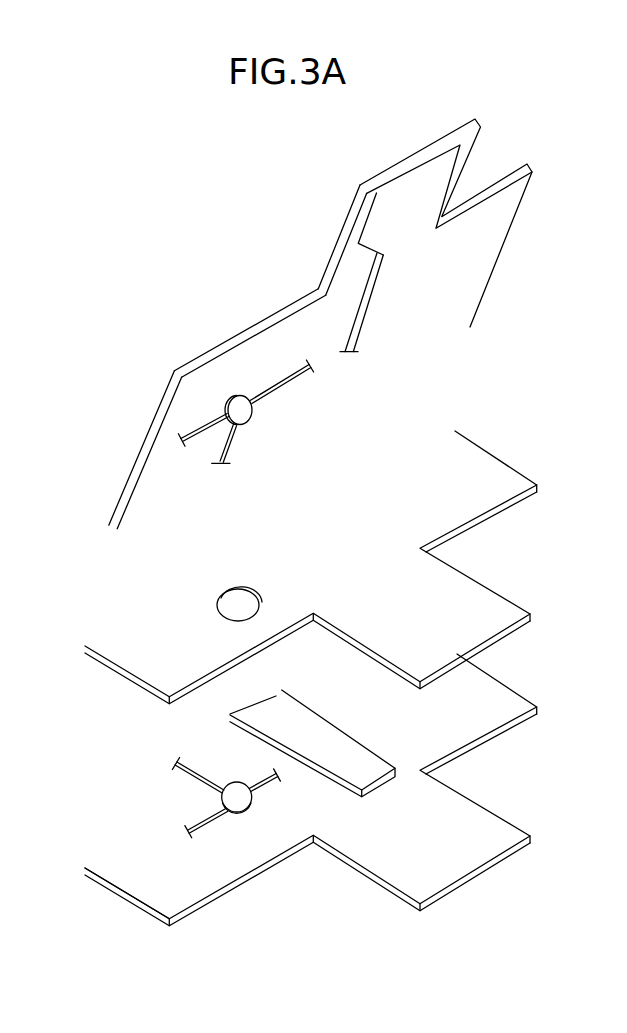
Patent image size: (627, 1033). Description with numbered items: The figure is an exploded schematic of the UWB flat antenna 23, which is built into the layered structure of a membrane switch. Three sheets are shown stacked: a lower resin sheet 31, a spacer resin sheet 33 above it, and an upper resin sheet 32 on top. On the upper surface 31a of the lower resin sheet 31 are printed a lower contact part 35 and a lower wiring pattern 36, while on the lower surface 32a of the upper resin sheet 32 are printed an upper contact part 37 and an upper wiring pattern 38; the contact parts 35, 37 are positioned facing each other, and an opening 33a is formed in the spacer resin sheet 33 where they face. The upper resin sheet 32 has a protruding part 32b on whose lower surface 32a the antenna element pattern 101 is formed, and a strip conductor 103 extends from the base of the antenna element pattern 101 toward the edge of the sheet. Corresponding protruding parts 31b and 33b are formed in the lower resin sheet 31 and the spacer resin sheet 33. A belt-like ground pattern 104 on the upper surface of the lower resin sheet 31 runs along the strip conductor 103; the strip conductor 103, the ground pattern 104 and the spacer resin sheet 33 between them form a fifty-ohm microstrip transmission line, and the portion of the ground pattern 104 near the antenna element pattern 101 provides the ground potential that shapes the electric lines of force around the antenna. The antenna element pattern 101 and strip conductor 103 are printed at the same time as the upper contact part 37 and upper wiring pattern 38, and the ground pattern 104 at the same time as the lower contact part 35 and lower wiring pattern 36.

The UWB flat antenna 23 is at (162, 131).
The antenna element pattern 101 is at (410, 195).
The strip conductor 103 is at (372, 302).
The ground pattern 104 is at (342, 744).
The lower resin sheet 31 is at (319, 792).
The upper surface of the lower resin sheet 31a is at (150, 891).
The protruding part of the lower resin sheet 31b is at (490, 812).
The upper resin sheet 32 is at (229, 330).
The lower surface of the upper resin sheet 32a is at (188, 402).
The protruding part of the upper resin sheet 32b is at (356, 197).
The spacer resin sheet 33 is at (324, 579).
The opening 33a is at (238, 606).
The protruding part of the spacer resin sheet 33b is at (490, 588).
The lower contact part 35 is at (236, 798).
The lower wiring pattern 36 is at (200, 813).
The upper contact part 37 is at (242, 412).
The upper wiring pattern 38 is at (188, 452).